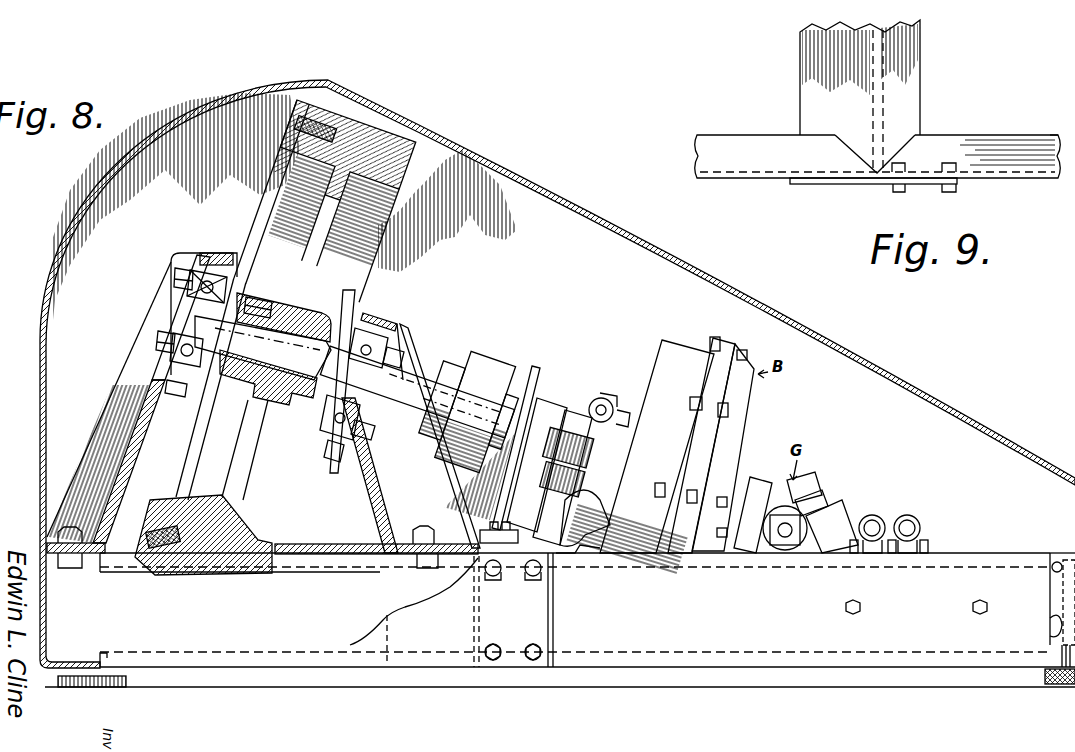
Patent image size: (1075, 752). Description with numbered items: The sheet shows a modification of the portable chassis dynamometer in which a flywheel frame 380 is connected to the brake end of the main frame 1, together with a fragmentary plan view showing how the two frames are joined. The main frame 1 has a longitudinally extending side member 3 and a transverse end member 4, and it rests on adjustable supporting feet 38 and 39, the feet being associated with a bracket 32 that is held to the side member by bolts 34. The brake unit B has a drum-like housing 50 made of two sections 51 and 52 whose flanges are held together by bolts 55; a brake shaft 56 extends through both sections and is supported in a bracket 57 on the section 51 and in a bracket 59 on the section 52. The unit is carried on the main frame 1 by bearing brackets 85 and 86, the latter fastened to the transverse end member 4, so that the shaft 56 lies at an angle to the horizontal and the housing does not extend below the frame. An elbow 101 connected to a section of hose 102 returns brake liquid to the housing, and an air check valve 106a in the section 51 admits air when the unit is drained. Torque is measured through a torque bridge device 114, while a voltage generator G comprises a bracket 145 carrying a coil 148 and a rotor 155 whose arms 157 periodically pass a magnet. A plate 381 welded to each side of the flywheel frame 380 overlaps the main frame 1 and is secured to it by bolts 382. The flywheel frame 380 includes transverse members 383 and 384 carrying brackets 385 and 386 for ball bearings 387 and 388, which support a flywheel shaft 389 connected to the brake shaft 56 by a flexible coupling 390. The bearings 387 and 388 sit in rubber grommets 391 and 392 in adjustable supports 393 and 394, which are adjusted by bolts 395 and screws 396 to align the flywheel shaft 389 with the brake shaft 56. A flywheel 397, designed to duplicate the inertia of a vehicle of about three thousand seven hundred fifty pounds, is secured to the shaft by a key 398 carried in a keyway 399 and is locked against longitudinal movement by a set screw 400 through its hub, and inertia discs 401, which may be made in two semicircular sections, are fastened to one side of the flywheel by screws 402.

In FIG. 8, the main frame 1 is at (1032, 553).
In FIG. 9, the main frame 1 is at (1049, 181).
In FIG. 8, the side member 3 is at (810, 672).
In FIG. 9, the side member 3 is at (1010, 136).
In FIG. 8, the transverse end member 4 is at (480, 612).
In FIG. 9, the transverse end member 4 is at (918, 82).
In FIG. 8, the bracket 32 is at (1049, 619).
In FIG. 8, the bolts 34 is at (1051, 569).
In FIG. 8, the adjustable supporting feet 38 is at (1045, 680).
In FIG. 8, the adjustable supporting feet 39 is at (124, 686).
In FIG. 8, the housing 50 is at (736, 348).
In FIG. 8, the housing section 51 is at (662, 347).
In FIG. 8, the housing section 52 is at (742, 442).
In FIG. 8, the bolts 55 is at (713, 338).
In FIG. 8, the brake shaft 56 is at (535, 390).
In FIG. 8, the bracket 57 is at (583, 410).
In FIG. 8, the bracket 59 is at (758, 486).
In FIG. 8, the bearing bracket 85 is at (840, 515).
In FIG. 8, the bearing bracket 86 is at (550, 408).
In FIG. 8, the elbow 101 is at (592, 510).
In FIG. 8, the hose section 102 is at (565, 556).
In FIG. 8, the air check valve 106a is at (606, 398).
In FIG. 8, the torque bridge device 114 is at (511, 523).
In FIG. 8, the bracket 145 is at (760, 556).
In FIG. 8, the coil 148 is at (810, 556).
In FIG. 8, the rotor 155 is at (824, 494).
In FIG. 8, the arms 157 is at (808, 478).
In FIG. 8, the flywheel frame 380 is at (322, 555).
In FIG. 9, the flywheel frame 380 is at (800, 90).
In FIG. 8, the plate 381 is at (548, 622).
In FIG. 9, the plate 381 is at (818, 186).
In FIG. 8, the bolts 382 is at (533, 662).
In FIG. 9, the bolts 382 is at (893, 192).
In FIG. 8, the transverse member 383 is at (52, 562).
In FIG. 8, the transverse member 384 is at (398, 560).
In FIG. 8, the bracket 385 is at (143, 328).
In FIG. 8, the bracket 386 is at (418, 378).
In FIG. 8, the ball bearing 387 is at (200, 296).
In FIG. 8, the ball bearing 388 is at (325, 425).
In FIG. 8, the flywheel shaft 389 is at (413, 418).
In FIG. 8, the flexible coupling 390 is at (498, 364).
In FIG. 8, the rubber grommet 391 is at (174, 274).
In FIG. 8, the rubber grommet 392 is at (382, 302).
In FIG. 8, the adjustable support 393 is at (246, 252).
In FIG. 8, the adjustable support 394 is at (398, 316).
In FIG. 8, the bolts 395 is at (158, 340).
In FIG. 8, the screws 396 is at (140, 397).
In FIG. 8, the flywheel 397 is at (410, 189).
In FIG. 8, the key 398 is at (345, 300).
In FIG. 8, the keyway 399 is at (263, 348).
In FIG. 8, the set screw 400 is at (275, 302).
In FIG. 8, the inertia discs 401 is at (291, 170).
In FIG. 8, the screws 402 is at (300, 125).